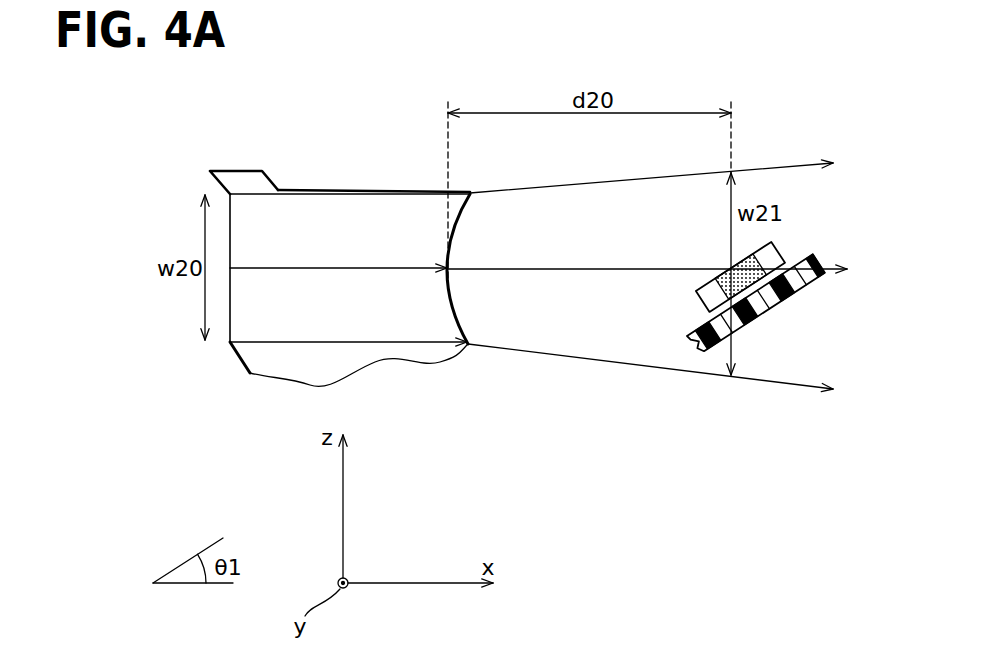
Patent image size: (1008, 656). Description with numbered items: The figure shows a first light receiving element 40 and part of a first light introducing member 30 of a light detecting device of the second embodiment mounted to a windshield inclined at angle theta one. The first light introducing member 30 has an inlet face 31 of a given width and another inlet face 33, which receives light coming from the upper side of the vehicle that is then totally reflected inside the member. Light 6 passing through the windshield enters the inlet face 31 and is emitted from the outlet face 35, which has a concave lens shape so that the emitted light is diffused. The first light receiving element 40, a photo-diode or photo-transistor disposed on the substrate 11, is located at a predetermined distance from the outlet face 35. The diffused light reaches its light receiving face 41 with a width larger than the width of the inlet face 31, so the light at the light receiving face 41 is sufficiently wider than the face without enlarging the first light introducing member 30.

The light 6 is at (392, 193).
The first light introducing member 30 is at (313, 189).
The inlet face 33 is at (245, 170).
The inlet face 31 is at (229, 333).
The outlet face 35 is at (452, 302).
The first light receiving element 40 is at (706, 312).
The light receiving face 41 is at (713, 282).
The substrate 11 is at (790, 305).